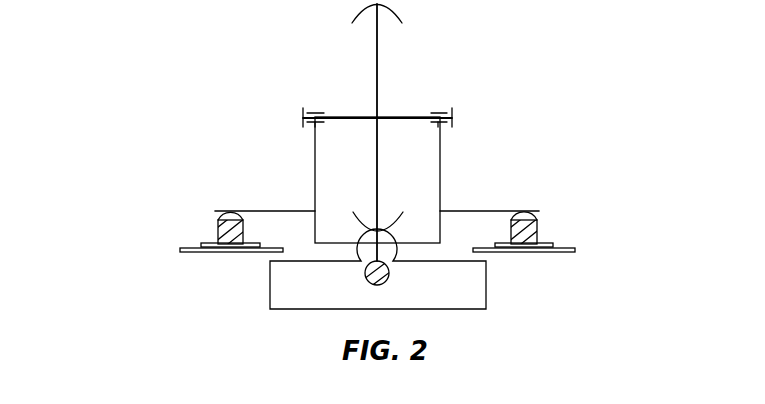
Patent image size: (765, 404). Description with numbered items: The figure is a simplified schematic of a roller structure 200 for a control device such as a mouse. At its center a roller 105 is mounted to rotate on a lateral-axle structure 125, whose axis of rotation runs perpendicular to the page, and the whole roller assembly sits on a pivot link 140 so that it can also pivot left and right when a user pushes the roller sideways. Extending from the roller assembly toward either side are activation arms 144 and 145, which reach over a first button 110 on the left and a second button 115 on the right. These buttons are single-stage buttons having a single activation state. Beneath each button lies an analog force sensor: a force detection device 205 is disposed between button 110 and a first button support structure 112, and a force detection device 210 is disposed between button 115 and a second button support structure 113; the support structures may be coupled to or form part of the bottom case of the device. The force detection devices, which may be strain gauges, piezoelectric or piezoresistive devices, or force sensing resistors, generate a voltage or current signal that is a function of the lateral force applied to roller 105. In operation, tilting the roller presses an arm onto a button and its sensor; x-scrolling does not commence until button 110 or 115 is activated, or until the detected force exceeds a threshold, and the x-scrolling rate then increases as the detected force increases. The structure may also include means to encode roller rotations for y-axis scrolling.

The roller structure 200 is at (104, 80).
The roller 105 is at (377, 80).
The lateral-axle structure 125 is at (452, 115).
The left arm 144 is at (253, 211).
The right arm 145 is at (502, 211).
The button 110 is at (217, 232).
The button 115 is at (538, 232).
The force detection device 205 is at (201, 244).
The force detection device 210 is at (555, 244).
The first button support structure 112 is at (189, 252).
The second button support structure 113 is at (562, 252).
The pivot link 140 is at (398, 273).